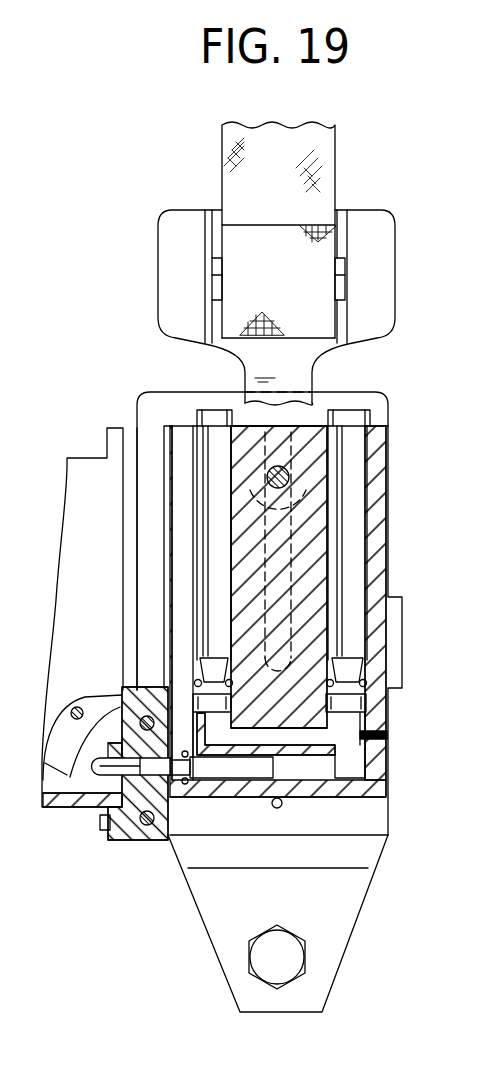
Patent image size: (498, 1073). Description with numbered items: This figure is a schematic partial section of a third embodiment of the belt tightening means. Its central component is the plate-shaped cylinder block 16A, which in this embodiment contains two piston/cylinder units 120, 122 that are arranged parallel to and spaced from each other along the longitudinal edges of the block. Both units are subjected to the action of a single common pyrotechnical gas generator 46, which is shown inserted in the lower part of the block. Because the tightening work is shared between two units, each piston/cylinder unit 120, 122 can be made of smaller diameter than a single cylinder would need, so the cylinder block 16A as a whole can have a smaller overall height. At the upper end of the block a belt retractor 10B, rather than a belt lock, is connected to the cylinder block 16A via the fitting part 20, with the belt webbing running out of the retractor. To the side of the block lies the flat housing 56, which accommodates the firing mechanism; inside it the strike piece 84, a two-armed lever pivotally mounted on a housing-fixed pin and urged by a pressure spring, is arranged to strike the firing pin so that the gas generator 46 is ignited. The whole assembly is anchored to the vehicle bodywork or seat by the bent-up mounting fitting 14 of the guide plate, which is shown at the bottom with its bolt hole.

The belt retractor 10B is at (158, 271).
The cylinder block 16A is at (258, 452).
The fitting part 20 is at (315, 372).
The piston/cylinder unit 122 is at (210, 497).
The piston/cylinder unit 120 is at (345, 532).
The flat housing 56 is at (67, 607).
The strike piece 84 is at (68, 810).
The gas generator 46 is at (223, 770).
The mounting fitting 14 is at (228, 938).